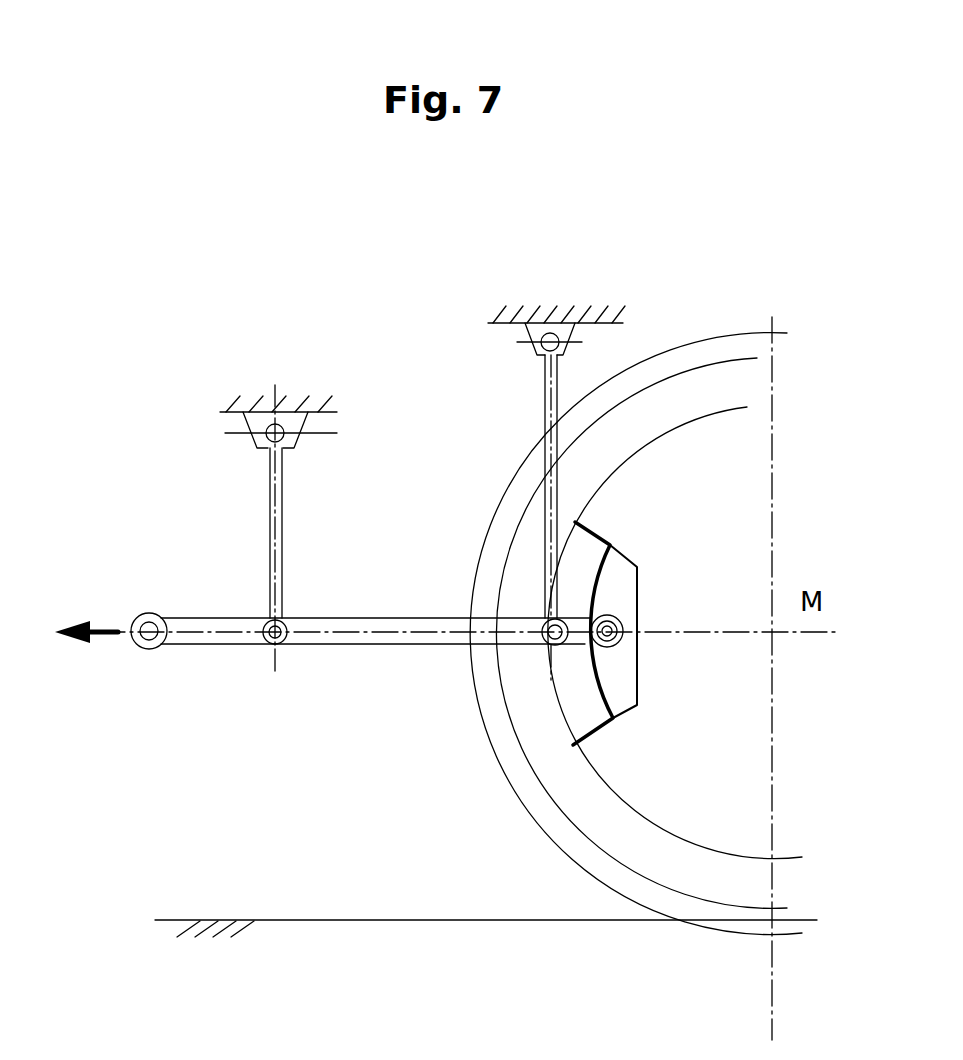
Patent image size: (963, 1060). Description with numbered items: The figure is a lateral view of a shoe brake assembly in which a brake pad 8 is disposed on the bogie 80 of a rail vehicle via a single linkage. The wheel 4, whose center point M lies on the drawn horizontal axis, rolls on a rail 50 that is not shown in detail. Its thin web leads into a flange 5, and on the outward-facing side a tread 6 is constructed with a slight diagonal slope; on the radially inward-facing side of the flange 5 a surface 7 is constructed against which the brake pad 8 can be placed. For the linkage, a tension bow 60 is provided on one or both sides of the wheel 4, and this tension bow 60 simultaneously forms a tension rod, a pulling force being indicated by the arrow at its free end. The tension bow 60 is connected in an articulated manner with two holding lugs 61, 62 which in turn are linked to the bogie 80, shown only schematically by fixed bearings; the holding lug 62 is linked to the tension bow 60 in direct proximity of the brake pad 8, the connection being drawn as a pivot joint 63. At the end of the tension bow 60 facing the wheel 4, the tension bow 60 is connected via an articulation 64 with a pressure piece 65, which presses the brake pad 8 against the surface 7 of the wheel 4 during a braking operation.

The wheel 4 is at (748, 806).
The flange 5 is at (698, 352).
The tread 6 is at (757, 358).
The surface 7 is at (747, 407).
The brake pad 8 is at (553, 682).
The rail 50 is at (277, 922).
The tension bow 60 is at (385, 615).
The holding lug 61 is at (277, 517).
The holding lug 62 is at (549, 388).
The pivot joint 63 is at (545, 637).
The articulation 64 is at (617, 668).
The pressure piece 65 is at (590, 725).
The bogie 80 is at (267, 366).